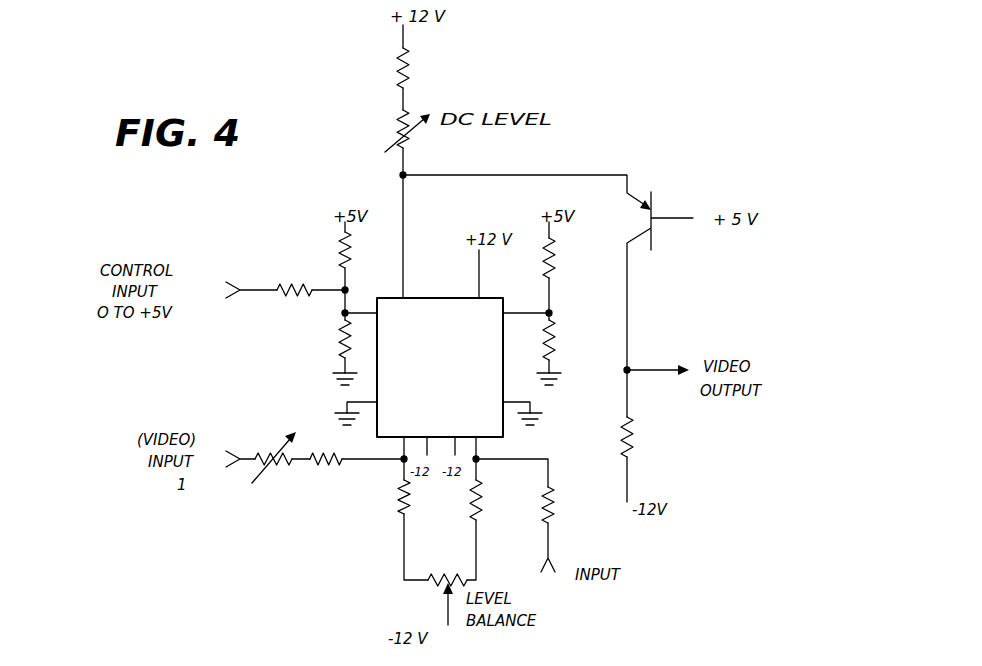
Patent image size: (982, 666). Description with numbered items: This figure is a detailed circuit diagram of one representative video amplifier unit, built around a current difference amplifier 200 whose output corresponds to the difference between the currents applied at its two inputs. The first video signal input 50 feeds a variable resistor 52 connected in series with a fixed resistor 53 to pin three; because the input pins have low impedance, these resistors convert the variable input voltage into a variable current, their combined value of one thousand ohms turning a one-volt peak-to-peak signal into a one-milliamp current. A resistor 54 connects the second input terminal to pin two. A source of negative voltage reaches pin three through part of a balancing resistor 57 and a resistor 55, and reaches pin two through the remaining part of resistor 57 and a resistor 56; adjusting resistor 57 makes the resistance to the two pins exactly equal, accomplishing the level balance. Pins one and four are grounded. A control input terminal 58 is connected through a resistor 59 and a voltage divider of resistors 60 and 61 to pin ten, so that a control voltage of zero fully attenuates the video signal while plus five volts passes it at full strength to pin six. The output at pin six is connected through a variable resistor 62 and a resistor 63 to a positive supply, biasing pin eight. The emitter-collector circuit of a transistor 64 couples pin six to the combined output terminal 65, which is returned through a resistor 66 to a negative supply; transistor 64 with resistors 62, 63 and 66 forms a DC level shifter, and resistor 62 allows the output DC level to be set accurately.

The first video signal input 50 is at (237, 454).
The variable resistor 52 is at (283, 465).
The fixed resistor 53 is at (344, 466).
The resistor 54 is at (551, 522).
The resistor 55 is at (404, 509).
The resistor 56 is at (482, 503).
The balancing resistor 57 is at (432, 586).
The control input terminal 58 is at (235, 283).
The resistor 59 is at (313, 262).
The resistor 60 is at (351, 256).
The resistor 61 is at (368, 326).
The variable resistor 62 is at (396, 127).
The resistor 63 is at (400, 72).
The transistor 64 is at (645, 240).
The combined output terminal 65 is at (631, 367).
The resistor 66 is at (622, 441).
The current difference amplifier 200 is at (464, 272).